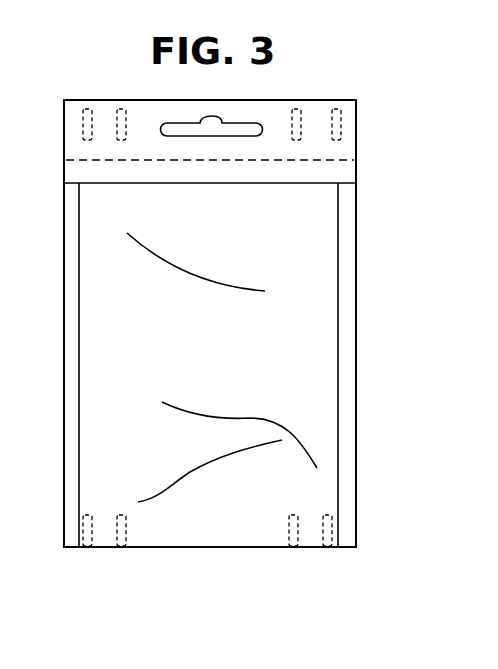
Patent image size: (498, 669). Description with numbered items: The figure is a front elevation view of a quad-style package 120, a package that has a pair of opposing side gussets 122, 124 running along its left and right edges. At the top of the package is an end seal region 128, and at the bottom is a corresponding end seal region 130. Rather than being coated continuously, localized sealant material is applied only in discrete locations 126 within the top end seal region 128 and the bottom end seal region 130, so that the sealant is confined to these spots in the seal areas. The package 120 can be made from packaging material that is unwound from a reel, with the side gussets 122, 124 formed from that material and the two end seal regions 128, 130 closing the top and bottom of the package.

The quad-style package 120 is at (231, 570).
The side gusset 122 is at (64, 383).
The side gusset 124 is at (350, 382).
The discrete locations 126 is at (88, 106).
The end seal region 128 is at (272, 114).
The end seal region 130 is at (308, 548).